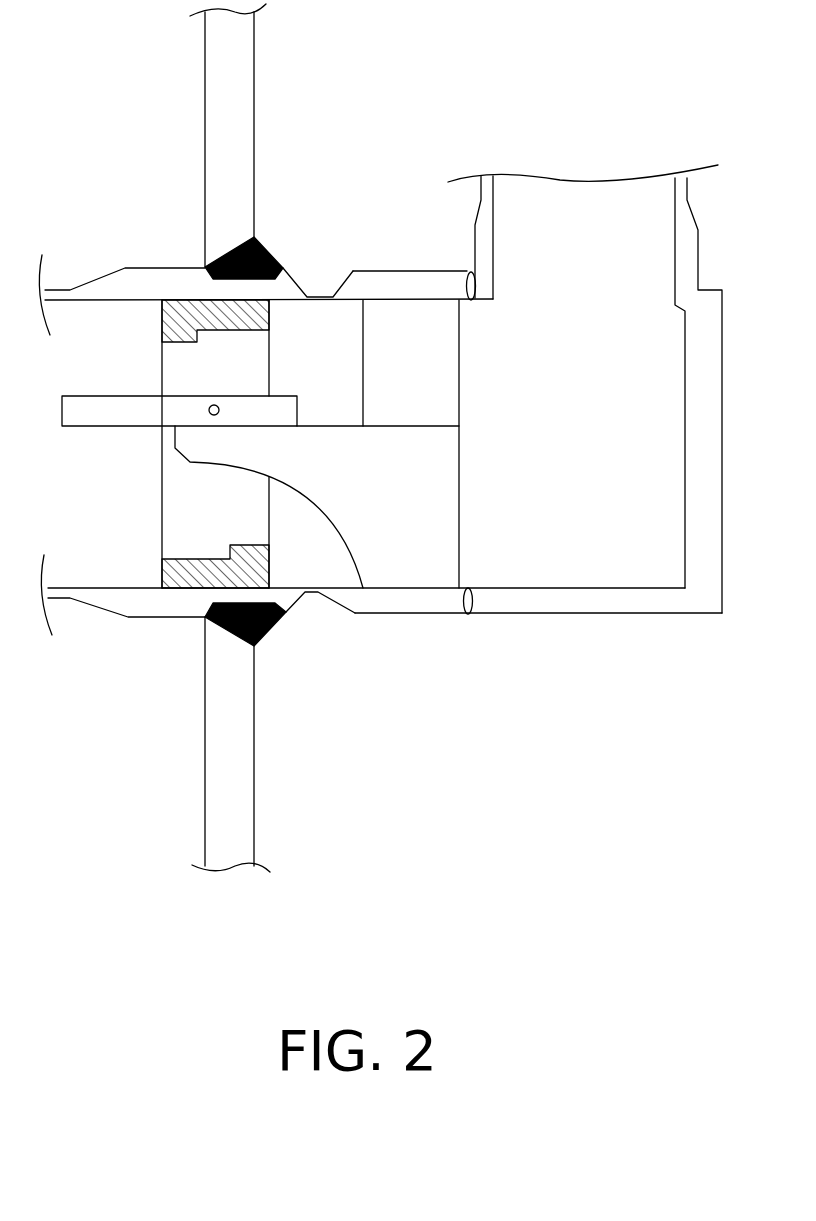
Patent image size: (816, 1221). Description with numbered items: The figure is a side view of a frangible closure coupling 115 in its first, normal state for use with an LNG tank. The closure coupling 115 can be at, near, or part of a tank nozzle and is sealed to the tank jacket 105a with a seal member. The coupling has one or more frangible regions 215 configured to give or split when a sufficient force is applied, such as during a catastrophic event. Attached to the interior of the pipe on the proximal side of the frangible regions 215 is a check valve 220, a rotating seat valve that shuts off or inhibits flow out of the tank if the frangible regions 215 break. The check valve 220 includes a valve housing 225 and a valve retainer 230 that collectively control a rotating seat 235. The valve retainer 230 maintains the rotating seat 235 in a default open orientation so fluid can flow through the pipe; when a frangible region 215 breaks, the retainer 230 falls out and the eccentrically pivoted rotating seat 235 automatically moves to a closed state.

The tank jacket 105a is at (232, 89).
The frangible closure coupling 115 is at (392, 157).
The frangible region 215 is at (327, 280).
The check valve 220 is at (234, 444).
The valve housing 225 is at (180, 357).
The valve retainer 230 is at (413, 563).
The rotating seat 235 is at (133, 406).